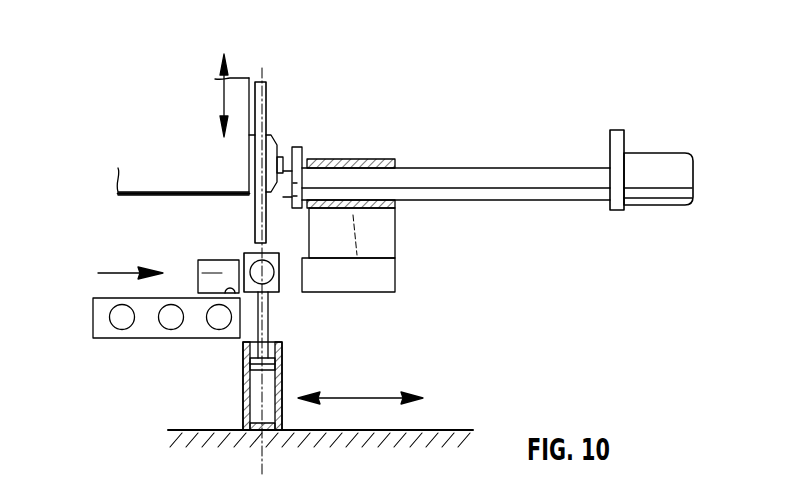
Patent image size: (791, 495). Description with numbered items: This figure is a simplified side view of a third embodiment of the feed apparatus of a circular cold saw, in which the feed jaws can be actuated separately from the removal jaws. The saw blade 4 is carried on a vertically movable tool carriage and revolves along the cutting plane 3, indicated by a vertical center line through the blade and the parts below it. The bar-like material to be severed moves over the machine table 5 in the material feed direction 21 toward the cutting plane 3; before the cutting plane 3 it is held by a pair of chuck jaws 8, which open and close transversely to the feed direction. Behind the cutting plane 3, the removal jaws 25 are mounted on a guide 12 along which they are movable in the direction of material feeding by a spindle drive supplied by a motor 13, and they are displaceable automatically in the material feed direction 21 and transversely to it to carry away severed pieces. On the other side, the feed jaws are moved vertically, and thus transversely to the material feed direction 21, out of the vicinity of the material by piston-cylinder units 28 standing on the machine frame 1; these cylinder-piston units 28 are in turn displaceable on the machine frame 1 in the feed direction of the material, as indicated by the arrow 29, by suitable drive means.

The machine frame 1 is at (200, 441).
The cutting plane 3 is at (263, 462).
The saw blade 4 is at (266, 90).
The machine table 5 is at (147, 321).
The chuck jaws 8 is at (216, 266).
The guide 12 is at (504, 175).
The motor 13 is at (657, 166).
The material feed direction 21 is at (119, 268).
The removal jaws 25 is at (383, 275).
The piston-cylinder units 28 is at (283, 373).
The arrow 29 is at (357, 398).